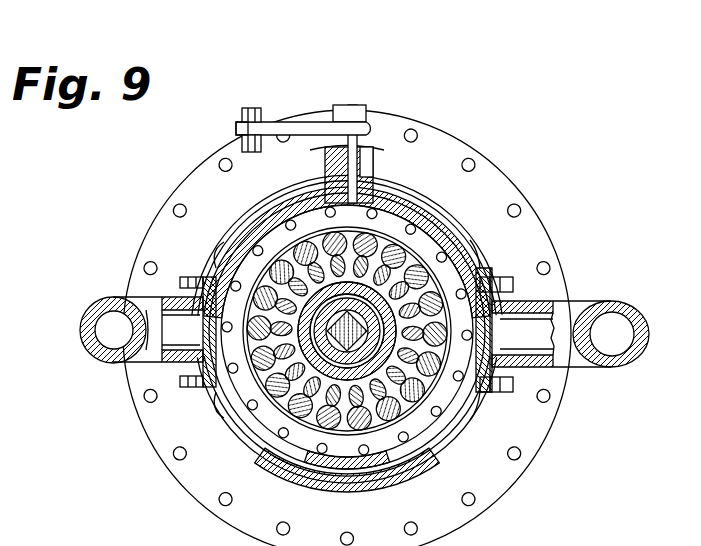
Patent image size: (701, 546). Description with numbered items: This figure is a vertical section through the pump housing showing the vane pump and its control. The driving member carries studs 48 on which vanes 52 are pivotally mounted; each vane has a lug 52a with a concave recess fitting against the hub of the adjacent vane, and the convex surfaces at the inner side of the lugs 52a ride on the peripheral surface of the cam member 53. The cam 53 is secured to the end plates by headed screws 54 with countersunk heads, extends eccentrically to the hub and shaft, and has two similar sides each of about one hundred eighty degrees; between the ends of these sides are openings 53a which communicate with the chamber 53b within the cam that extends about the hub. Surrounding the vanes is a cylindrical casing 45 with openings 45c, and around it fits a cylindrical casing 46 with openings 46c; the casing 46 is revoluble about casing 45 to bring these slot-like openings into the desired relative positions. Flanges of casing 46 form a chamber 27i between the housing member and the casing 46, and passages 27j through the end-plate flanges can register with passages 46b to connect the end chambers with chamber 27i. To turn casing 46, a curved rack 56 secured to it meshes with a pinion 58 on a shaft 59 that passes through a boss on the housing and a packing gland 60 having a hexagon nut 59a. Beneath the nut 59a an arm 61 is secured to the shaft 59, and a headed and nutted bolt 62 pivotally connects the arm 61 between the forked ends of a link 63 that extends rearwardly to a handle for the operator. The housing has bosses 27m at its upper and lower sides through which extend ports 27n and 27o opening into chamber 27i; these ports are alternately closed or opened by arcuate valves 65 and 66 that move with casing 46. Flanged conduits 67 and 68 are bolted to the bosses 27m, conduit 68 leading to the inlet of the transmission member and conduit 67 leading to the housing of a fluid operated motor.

The chamber 27i is at (245, 395).
The passages 27j is at (236, 262).
The bosses 27m is at (203, 282).
The port 27n is at (490, 400).
The port 27o is at (214, 275).
The cylindrical casing 45 is at (414, 245).
The openings 45c is at (285, 240).
The cylindrical casing 46 is at (436, 270).
The passages 46b is at (262, 398).
The openings 46c is at (268, 232).
The studs 48 is at (302, 415).
The vanes 52 is at (330, 432).
The lugs 52a is at (320, 318).
The cam member 53 is at (327, 348).
The openings 53a is at (345, 370).
The chamber 53b is at (385, 440).
The headed screws 54 is at (372, 336).
The curved rack 56 is at (302, 236).
The pinion 58 is at (345, 212).
The shaft 59 is at (332, 150).
The nut 59a is at (356, 120).
The packing gland 60 is at (376, 128).
The arm 61 is at (297, 131).
The headed and nutted bolt 62 is at (251, 108).
The link 63 is at (238, 127).
The arcuate valve 65 is at (477, 402).
The arcuate valve 66 is at (215, 331).
The flanged conduit 67 is at (610, 368).
The flanged conduit 68 is at (100, 362).